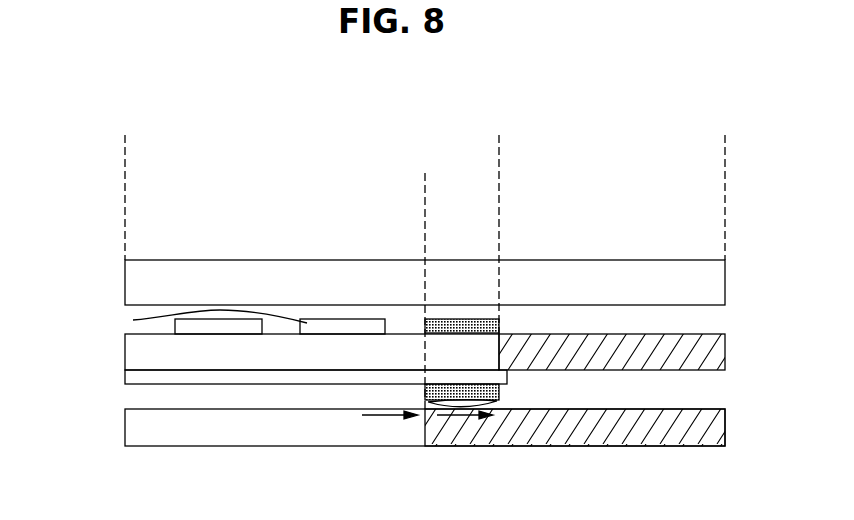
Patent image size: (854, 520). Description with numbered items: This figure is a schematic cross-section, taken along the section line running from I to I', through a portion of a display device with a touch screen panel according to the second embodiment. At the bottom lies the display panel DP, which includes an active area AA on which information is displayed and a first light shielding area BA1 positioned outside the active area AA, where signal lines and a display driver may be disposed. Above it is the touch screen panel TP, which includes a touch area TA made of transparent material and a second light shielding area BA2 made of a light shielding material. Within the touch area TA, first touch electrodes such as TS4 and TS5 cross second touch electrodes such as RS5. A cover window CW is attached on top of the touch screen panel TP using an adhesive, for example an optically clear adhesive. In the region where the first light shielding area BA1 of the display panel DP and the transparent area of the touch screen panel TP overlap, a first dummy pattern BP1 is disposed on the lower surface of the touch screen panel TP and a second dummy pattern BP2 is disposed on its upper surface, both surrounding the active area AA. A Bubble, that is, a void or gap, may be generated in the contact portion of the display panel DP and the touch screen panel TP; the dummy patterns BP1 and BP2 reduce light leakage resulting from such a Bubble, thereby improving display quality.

The cover window CW is at (125, 268).
The first touch electrode TS5 is at (133, 320).
The first touch electrode TS4 is at (183, 324).
The touch screen panel TP is at (125, 359).
The second touch electrode RS5 is at (125, 377).
The display panel DP is at (125, 420).
The first dummy pattern BP1 is at (499, 391).
The second dummy pattern BP2 is at (499, 325).
The bubble Bubble is at (496, 403).
The touch area TA is at (125, 163).
The active area AA is at (425, 206).
The first light shielding area BA1 is at (725, 206).
The second light shielding area BA2 is at (725, 163).
The section line start I is at (124, 463).
The section line end I' is at (730, 461).